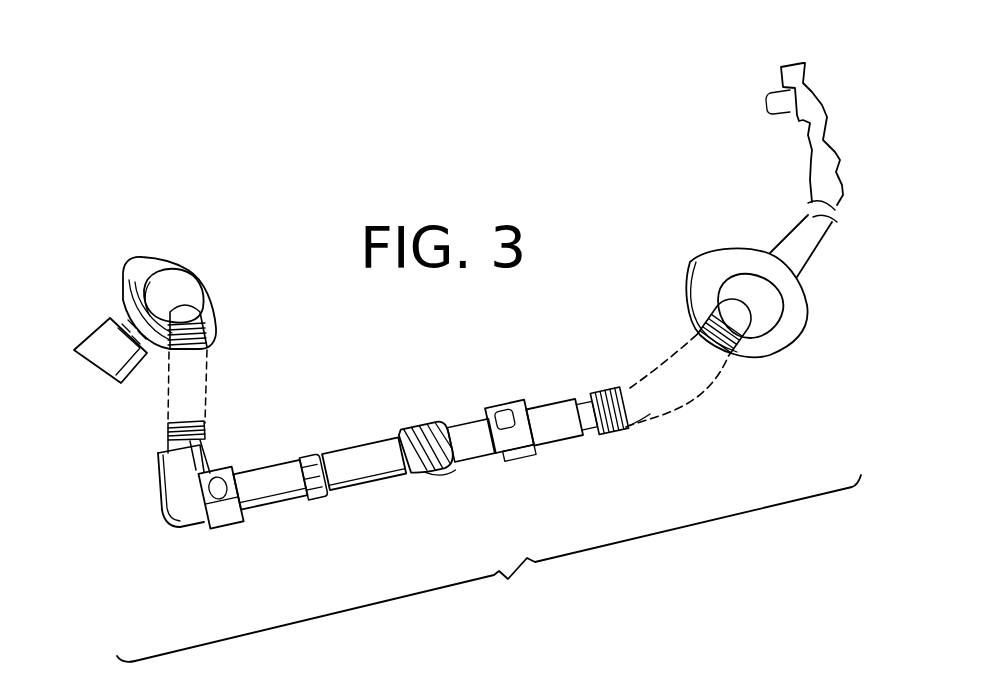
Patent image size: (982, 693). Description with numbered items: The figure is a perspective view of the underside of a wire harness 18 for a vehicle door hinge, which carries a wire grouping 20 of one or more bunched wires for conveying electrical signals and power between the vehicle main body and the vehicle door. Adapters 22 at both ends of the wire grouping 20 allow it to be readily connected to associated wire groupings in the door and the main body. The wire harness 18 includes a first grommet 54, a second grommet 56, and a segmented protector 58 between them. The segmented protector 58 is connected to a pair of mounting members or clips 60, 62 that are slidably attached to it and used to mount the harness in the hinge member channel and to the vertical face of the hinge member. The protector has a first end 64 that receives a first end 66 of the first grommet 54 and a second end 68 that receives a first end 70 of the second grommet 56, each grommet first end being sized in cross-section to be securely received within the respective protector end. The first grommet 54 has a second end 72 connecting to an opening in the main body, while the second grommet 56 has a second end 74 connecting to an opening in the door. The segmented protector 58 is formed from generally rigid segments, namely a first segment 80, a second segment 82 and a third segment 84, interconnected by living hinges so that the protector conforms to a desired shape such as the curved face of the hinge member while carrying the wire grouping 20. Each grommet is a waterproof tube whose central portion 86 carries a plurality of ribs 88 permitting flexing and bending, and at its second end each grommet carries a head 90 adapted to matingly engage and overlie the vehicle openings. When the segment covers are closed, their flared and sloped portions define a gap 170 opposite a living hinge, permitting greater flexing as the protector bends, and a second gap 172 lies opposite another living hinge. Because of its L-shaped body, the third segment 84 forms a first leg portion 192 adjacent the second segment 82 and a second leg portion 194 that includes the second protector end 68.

The wire harness 18 is at (489, 568).
The wire grouping 20 is at (433, 470).
The adapters 22 is at (96, 350).
The first grommet 54 is at (713, 393).
The second grommet 56 is at (224, 368).
The segmented protector 58 is at (342, 434).
The clip 60 is at (490, 410).
The clip 62 is at (207, 513).
The first end of segmented protector 64 is at (560, 400).
The first end of first grommet 66 is at (590, 420).
The second end of segmented protector 68 is at (158, 447).
The first end of second grommet 70 is at (202, 440).
The second end of first grommet 72 is at (793, 297).
The second end of second grommet 74 is at (182, 280).
The first segment 80 is at (560, 440).
The second segment 82 is at (352, 497).
The third segment 84 is at (170, 507).
The central portion 86 is at (170, 380).
The ribs 88 is at (203, 320).
The head 90 is at (127, 272).
The gap 170 is at (427, 424).
The second gap 172 is at (329, 511).
The first leg portion 192 is at (270, 513).
The second leg portion 194 is at (213, 459).